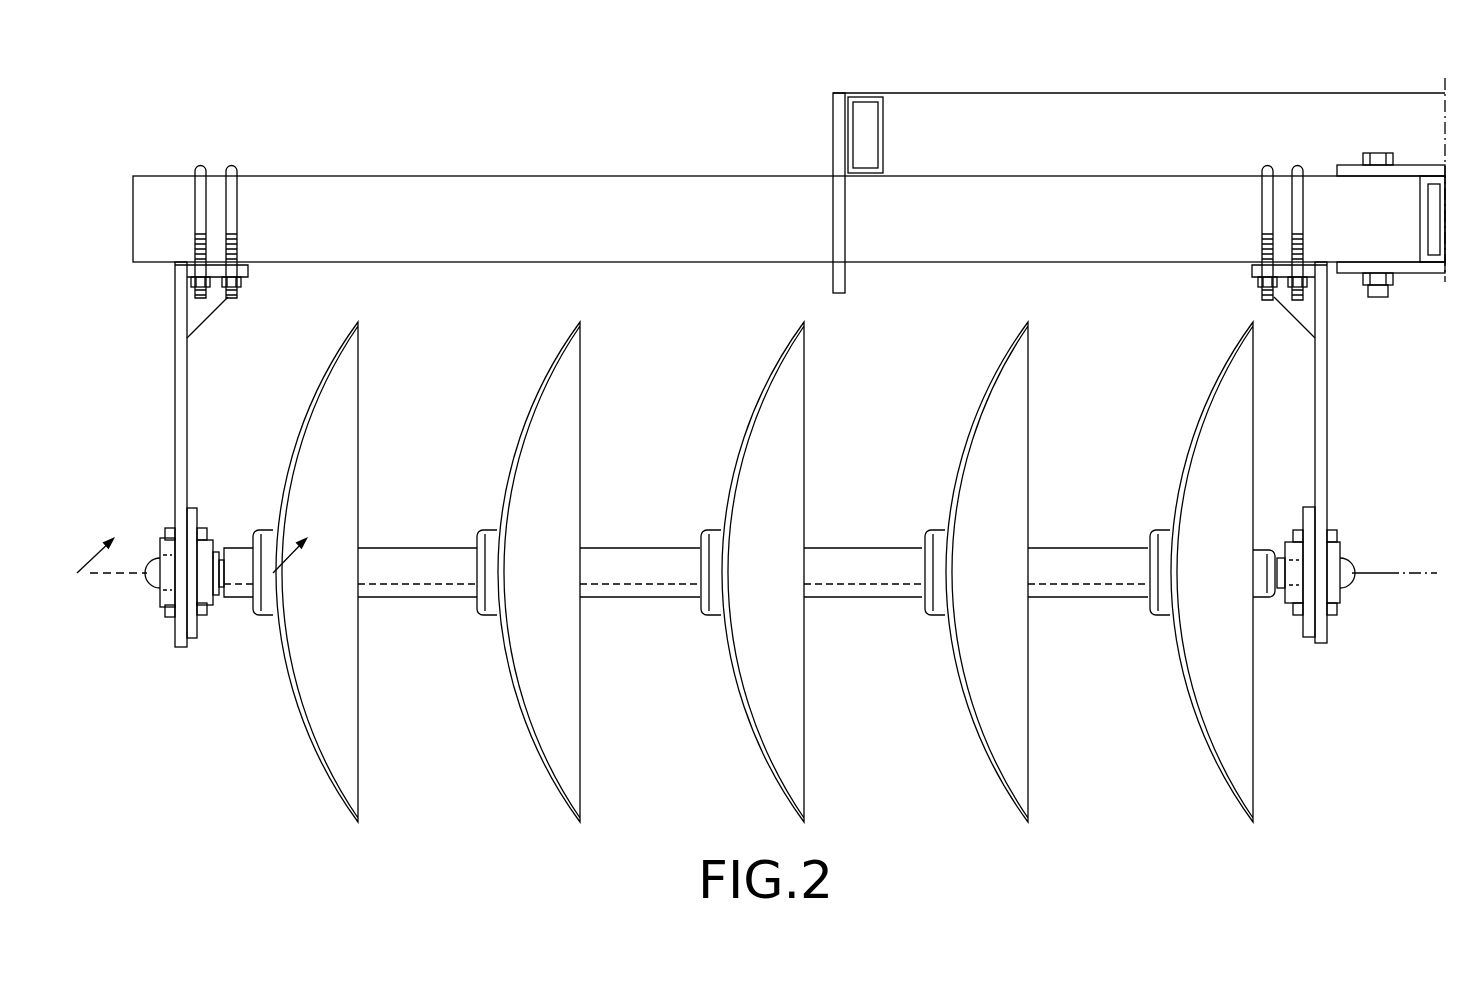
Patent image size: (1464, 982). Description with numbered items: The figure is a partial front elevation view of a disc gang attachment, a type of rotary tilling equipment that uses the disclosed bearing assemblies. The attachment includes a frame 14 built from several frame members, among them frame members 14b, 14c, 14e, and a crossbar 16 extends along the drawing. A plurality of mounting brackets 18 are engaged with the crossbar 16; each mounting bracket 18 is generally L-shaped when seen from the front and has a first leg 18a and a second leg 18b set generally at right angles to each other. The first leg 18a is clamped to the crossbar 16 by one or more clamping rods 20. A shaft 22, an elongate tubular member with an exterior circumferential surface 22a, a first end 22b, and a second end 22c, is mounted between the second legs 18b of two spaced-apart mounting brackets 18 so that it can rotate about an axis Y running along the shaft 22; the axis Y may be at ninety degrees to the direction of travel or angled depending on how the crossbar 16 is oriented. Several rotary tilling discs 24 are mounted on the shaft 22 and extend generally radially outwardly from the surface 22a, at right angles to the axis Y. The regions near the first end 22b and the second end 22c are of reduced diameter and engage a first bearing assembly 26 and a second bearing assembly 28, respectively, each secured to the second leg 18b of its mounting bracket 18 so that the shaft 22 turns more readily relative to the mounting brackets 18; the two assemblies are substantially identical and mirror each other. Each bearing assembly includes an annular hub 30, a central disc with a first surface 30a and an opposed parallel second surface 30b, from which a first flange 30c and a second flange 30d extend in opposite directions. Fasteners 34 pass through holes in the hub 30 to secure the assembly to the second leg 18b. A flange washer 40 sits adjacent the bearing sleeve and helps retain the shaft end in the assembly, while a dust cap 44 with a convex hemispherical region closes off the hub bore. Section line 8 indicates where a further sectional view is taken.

The section line 8- 8 is at (202, 543).
The frame 14 is at (1111, 163).
The frame member 14b is at (1052, 115).
The frame member 14c is at (870, 93).
The frame member 14e is at (1417, 203).
The crossbar 16 is at (505, 195).
The mounting bracket 18 is at (754, 422).
The first leg 18a is at (217, 263).
The second leg 18b is at (175, 366).
The clamping rod 20 is at (231, 165).
The shaft 22 is at (749, 565).
The exterior circumferential surface 22a is at (420, 563).
The first end 22b is at (160, 595).
The second end 22c is at (1333, 582).
The rotary tilling disc 24 is at (320, 381).
The first bearing assembly 26 is at (226, 635).
The second bearing assembly 28 is at (1298, 630).
The annular hub 30 is at (226, 635).
The first surface 30a is at (125, 528).
The second surface 30b is at (200, 630).
The first flange 30c is at (160, 545).
The second flange 30d is at (213, 560).
The fastener 34 is at (200, 530).
The flange washer 40 is at (230, 580).
The dust cap 44 is at (165, 578).
The axis Y is at (1370, 575).